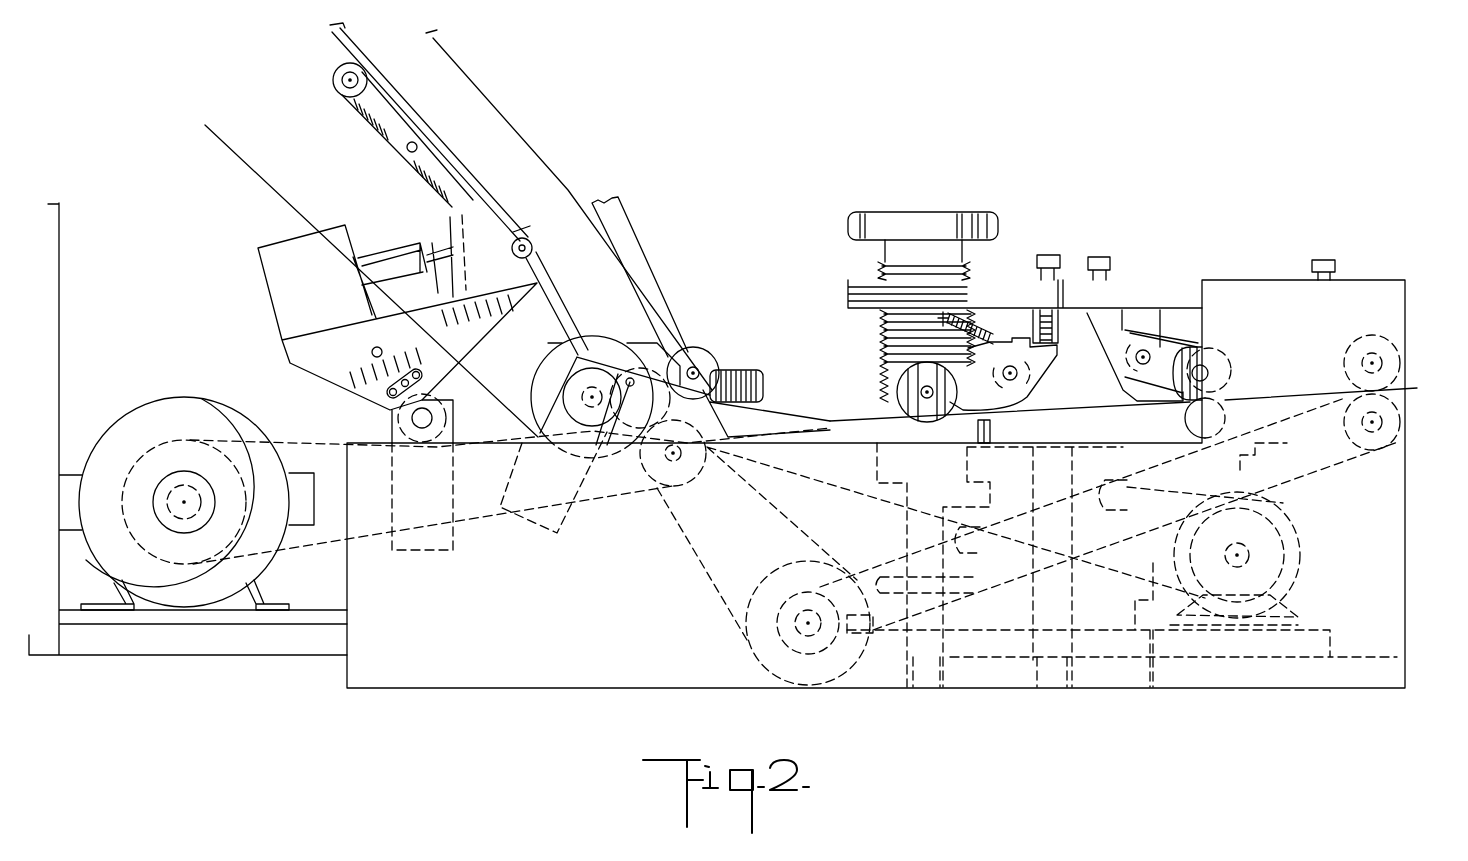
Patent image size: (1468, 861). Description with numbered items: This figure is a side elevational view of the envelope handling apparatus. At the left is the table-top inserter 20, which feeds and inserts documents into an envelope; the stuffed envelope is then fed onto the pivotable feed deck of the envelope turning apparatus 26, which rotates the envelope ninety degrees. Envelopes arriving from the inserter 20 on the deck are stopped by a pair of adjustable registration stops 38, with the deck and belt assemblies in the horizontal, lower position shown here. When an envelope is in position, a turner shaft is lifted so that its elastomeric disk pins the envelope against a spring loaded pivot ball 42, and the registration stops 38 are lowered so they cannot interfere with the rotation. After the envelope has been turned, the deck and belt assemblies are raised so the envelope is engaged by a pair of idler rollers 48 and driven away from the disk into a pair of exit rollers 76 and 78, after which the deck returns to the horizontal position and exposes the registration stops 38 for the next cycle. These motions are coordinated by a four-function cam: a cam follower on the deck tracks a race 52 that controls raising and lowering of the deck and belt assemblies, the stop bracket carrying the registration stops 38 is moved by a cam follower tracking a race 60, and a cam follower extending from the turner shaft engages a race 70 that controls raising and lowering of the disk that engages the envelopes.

The table-top inserter 20 is at (577, 165).
The envelope turning apparatus 26 is at (925, 697).
The registration stops 38 is at (990, 428).
The spring loaded pivot ball 42 is at (897, 417).
The idler rollers 48 is at (1197, 347).
The race 52 is at (1015, 443).
The race 60 is at (1133, 465).
The race 70 is at (1156, 688).
The exit roller 76 is at (1398, 357).
The exit roller 78 is at (1400, 430).